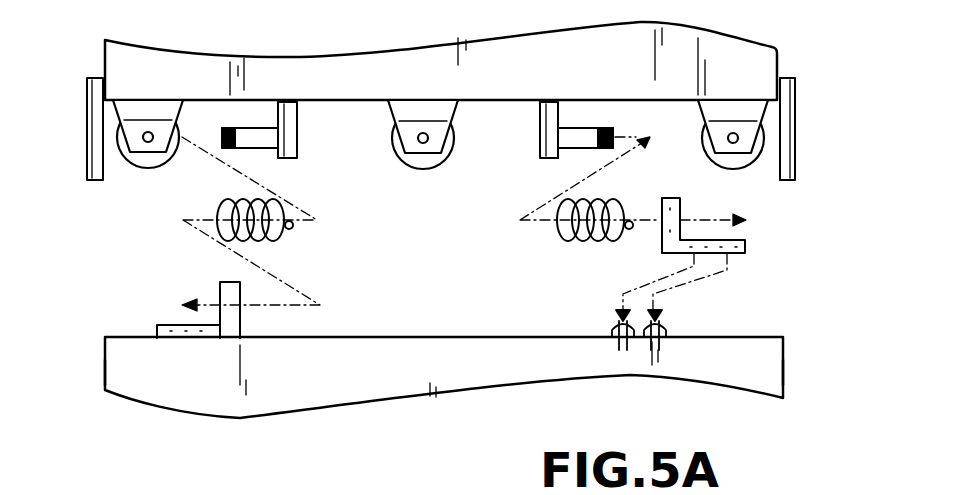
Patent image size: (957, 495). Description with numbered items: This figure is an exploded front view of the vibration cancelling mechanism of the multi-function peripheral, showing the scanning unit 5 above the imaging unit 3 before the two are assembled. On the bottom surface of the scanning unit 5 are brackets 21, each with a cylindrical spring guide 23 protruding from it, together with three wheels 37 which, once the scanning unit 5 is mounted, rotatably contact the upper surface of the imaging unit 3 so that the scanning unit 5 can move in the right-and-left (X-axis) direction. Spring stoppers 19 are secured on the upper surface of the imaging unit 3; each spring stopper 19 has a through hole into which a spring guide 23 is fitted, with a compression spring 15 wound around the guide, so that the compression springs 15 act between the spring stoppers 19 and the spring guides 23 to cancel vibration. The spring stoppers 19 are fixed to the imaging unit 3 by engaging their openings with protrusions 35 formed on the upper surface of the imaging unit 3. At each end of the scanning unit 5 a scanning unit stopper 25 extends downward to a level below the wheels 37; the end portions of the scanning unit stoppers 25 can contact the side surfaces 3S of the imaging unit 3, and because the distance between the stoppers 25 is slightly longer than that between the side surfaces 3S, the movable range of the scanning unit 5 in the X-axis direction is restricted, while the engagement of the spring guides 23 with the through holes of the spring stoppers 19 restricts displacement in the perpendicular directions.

The scanning unit 5 is at (426, 52).
The scanning unit stopper 25 is at (88, 110).
The wheel 37 is at (142, 162).
The bracket 21 is at (292, 133).
The cylindrical spring guide 23 is at (252, 134).
The compression spring 15 is at (283, 238).
The spring stopper 19 is at (163, 326).
The protrusion 35 is at (651, 340).
The imaging unit 3 is at (382, 388).
The side surface 3S is at (103, 373).